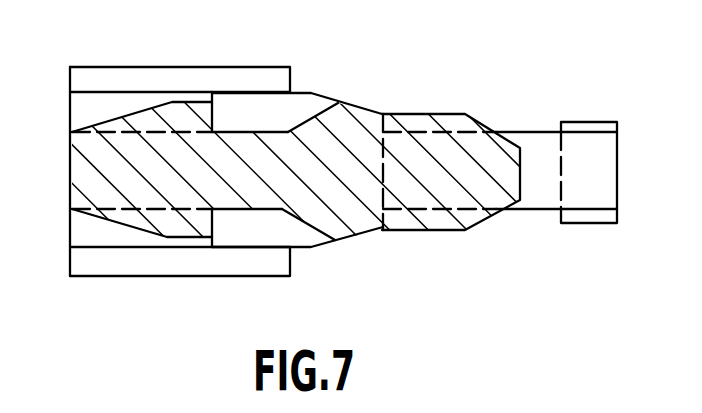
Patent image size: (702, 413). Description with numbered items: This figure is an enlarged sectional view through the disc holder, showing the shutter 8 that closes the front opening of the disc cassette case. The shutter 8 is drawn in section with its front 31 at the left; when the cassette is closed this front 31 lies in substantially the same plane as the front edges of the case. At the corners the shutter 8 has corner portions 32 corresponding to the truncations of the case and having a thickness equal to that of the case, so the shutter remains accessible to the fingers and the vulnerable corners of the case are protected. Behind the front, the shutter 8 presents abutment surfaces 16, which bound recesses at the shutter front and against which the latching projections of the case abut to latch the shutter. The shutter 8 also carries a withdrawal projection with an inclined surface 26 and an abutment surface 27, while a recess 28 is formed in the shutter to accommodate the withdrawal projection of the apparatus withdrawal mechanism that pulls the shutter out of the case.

The shutter 8 is at (357, 145).
The abutment surface 16 is at (207, 98).
The inclined surface 26 is at (132, 113).
The abutment surface 27 is at (213, 118).
The recess 28 is at (273, 102).
The front 31 is at (70, 163).
The corner portion 32 is at (104, 263).